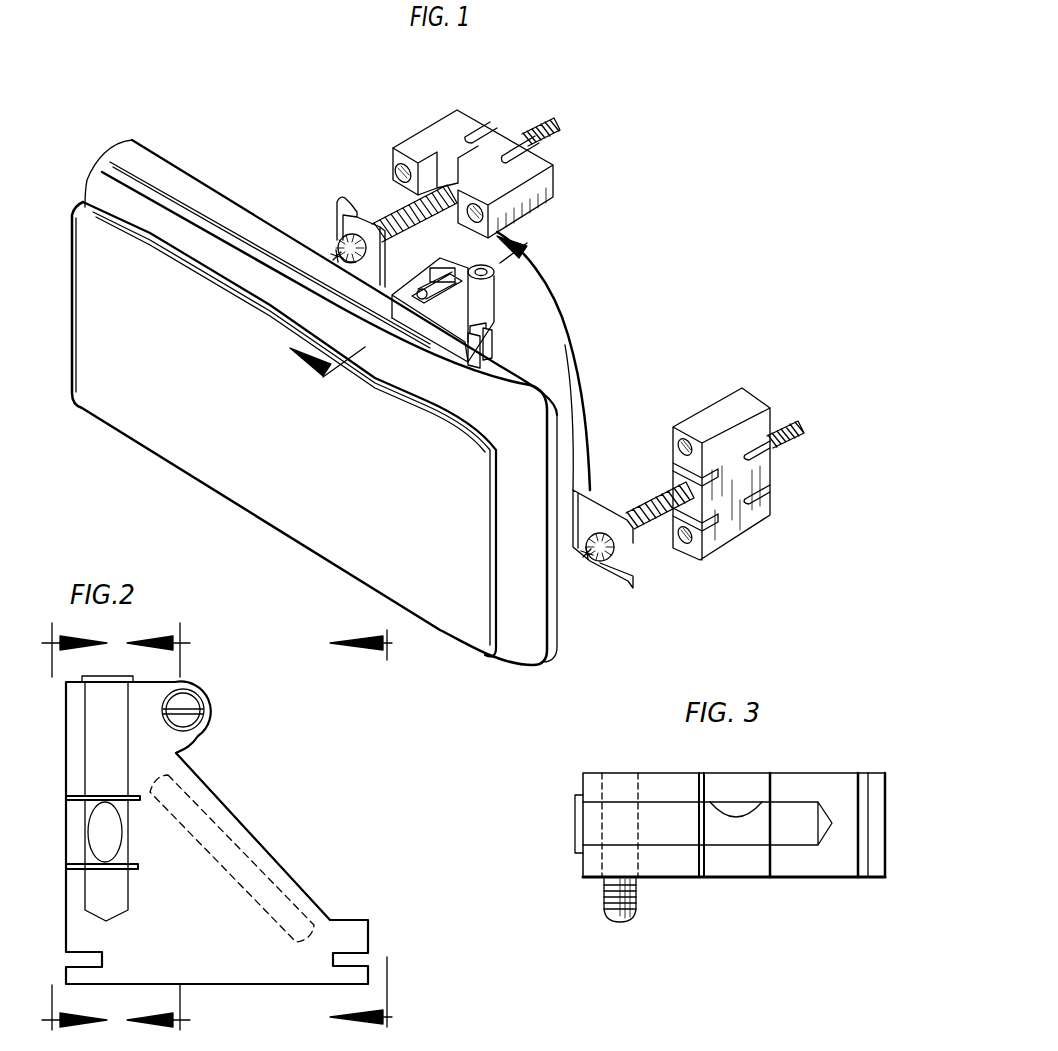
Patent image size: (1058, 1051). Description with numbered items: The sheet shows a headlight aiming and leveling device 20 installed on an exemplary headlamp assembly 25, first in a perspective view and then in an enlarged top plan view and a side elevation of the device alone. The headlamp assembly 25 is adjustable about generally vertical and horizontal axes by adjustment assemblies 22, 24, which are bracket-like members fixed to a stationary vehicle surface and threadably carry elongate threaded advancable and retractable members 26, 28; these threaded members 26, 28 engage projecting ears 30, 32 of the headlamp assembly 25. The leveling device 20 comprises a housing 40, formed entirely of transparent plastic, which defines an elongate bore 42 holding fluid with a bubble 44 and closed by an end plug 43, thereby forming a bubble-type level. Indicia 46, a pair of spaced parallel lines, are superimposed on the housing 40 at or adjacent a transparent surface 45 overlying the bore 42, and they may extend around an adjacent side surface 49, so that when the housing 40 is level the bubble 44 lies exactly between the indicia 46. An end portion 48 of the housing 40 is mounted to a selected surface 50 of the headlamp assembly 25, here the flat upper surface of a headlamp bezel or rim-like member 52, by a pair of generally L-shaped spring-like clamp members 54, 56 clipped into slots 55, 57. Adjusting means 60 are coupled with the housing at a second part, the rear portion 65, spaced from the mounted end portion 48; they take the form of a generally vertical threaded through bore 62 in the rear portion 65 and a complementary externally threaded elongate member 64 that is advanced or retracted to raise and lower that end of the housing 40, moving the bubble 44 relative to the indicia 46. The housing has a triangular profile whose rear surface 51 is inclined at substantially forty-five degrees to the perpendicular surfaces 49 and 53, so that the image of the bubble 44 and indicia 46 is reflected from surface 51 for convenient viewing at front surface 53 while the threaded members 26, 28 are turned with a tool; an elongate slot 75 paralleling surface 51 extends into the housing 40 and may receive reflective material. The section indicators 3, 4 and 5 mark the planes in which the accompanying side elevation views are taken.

In FIG. 1, the headlight aiming and leveling device 20 is at (520, 277).
In FIG. 2, the headlight aiming and leveling device 20 is at (310, 752).
In FIG. 1, the adjustment assembly 22 is at (560, 183).
In FIG. 1, the adjustment assembly 24 is at (768, 407).
In FIG. 1, the headlamp assembly 25 is at (240, 507).
In FIG. 1, the elongate threaded advancable and retractable member 26 is at (395, 192).
In FIG. 1, the elongate threaded advancable and retractable member 28 is at (652, 525).
In FIG. 1, the projecting ear 30 is at (337, 220).
In FIG. 1, the projecting ear 32 is at (607, 567).
In FIG. 1, the housing 40 is at (490, 309).
In FIG. 2, the housing 40 is at (330, 895).
In FIG. 3, the housing 40 is at (790, 885).
In FIG. 1, the elongate cavity, bore or chamber 42 is at (473, 264).
In FIG. 2, the elongate cavity, bore or chamber 42 is at (98, 772).
In FIG. 3, the elongate cavity, bore or chamber 42 is at (807, 835).
In FIG. 2, the end plug 43 is at (103, 717).
In FIG. 3, the end plug 43 is at (580, 820).
In FIG. 1, the bubble 44 is at (447, 280).
In FIG. 2, the bubble 44 is at (100, 832).
In FIG. 3, the bubble 44 is at (737, 812).
In FIG. 2, the transparent surface 45 is at (200, 928).
In FIG. 3, the transparent surface 45 is at (667, 773).
In FIG. 2, the level-indicating indicia 46 is at (140, 868).
In FIG. 3, the level-indicating indicia 46 is at (770, 773).
In FIG. 1, the end portion 48 is at (425, 335).
In FIG. 2, the end portion 48 is at (298, 989).
In FIG. 3, the end portion 48 is at (896, 854).
In FIG. 2, the side surface 49 is at (66, 897).
In FIG. 3, the side surface 49 is at (670, 863).
In FIG. 1, the selected surface 50 is at (540, 384).
In FIG. 2, the rear surface 51 is at (243, 825).
In FIG. 1, the headlamp bezel 52 is at (573, 403).
In FIG. 2, the front surface 53 is at (238, 986).
In FIG. 3, the front surface 53 is at (887, 783).
In FIG. 1, the L-shaped spring-like clamp member 54 is at (393, 285).
In FIG. 2, the slot 55 is at (66, 957).
In FIG. 3, the slot 55 is at (858, 777).
In FIG. 1, the L-shaped spring-like clamp member 56 is at (480, 350).
In FIG. 2, the slot 57 is at (367, 957).
In FIG. 2, the adjusting means 60 is at (215, 740).
In FIG. 3, the adjusting means 60 is at (575, 870).
In FIG. 2, the threaded through bore 62 is at (207, 690).
In FIG. 3, the threaded through bore 62 is at (605, 790).
In FIG. 3, the externally threaded elongate member 64 is at (603, 903).
In FIG. 2, the rear portion 65 is at (153, 682).
In FIG. 3, the rear portion 65 is at (583, 787).
In FIG. 2, the elongate slot 75 is at (212, 790).
In FIG. 2, the line 3— 3 is at (65, 828).
In FIG. 2, the line 4— 4 is at (347, 830).
In FIG. 1, the section line 5 is at (420, 308).
In FIG. 2, the section line 5 is at (168, 828).